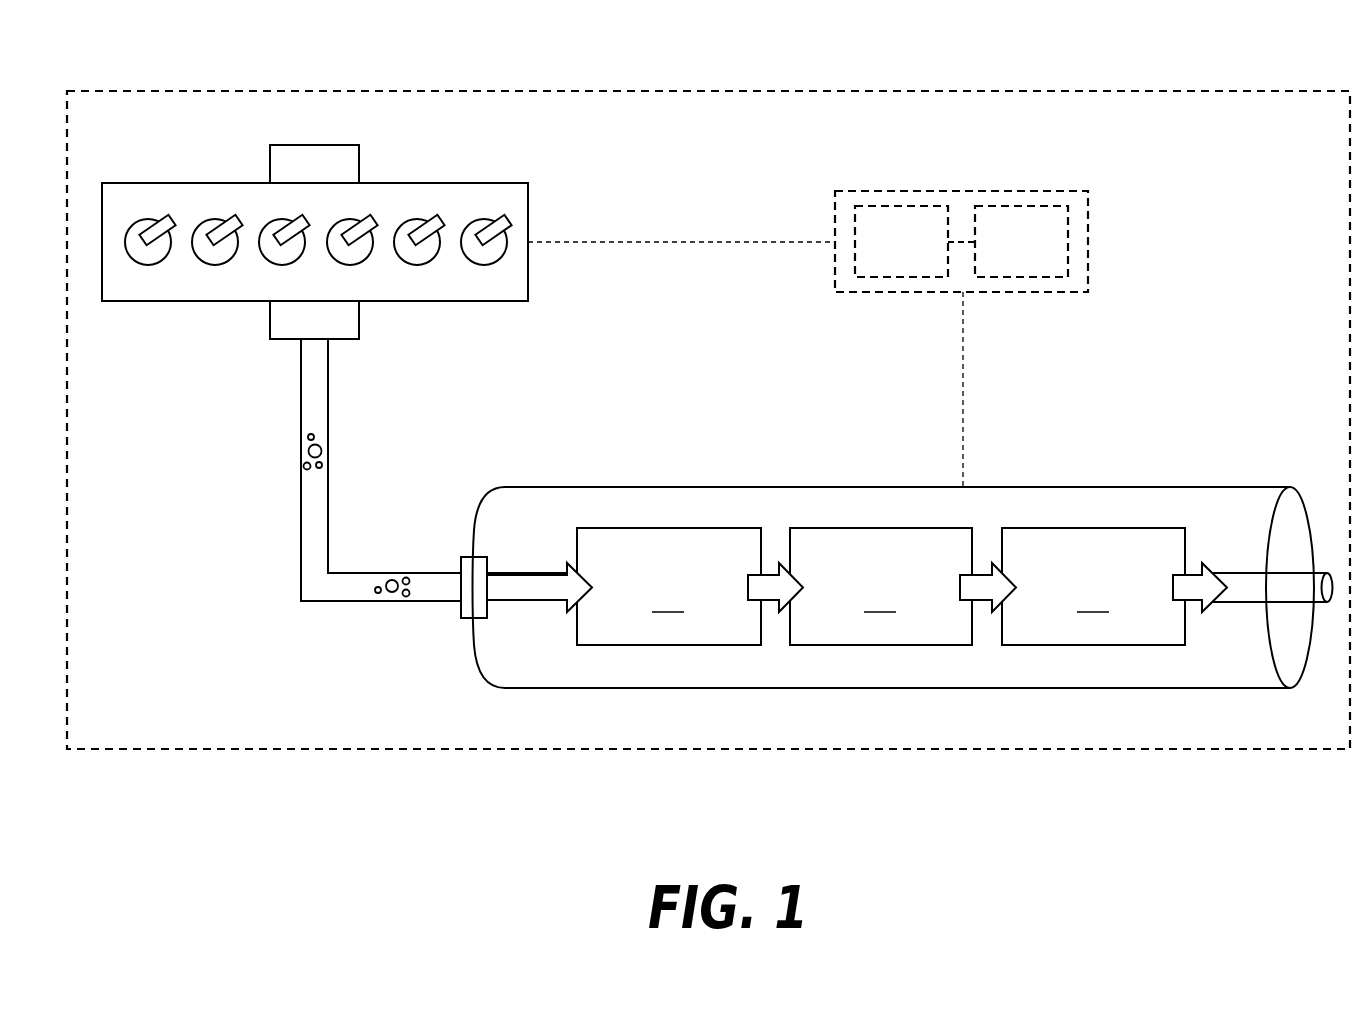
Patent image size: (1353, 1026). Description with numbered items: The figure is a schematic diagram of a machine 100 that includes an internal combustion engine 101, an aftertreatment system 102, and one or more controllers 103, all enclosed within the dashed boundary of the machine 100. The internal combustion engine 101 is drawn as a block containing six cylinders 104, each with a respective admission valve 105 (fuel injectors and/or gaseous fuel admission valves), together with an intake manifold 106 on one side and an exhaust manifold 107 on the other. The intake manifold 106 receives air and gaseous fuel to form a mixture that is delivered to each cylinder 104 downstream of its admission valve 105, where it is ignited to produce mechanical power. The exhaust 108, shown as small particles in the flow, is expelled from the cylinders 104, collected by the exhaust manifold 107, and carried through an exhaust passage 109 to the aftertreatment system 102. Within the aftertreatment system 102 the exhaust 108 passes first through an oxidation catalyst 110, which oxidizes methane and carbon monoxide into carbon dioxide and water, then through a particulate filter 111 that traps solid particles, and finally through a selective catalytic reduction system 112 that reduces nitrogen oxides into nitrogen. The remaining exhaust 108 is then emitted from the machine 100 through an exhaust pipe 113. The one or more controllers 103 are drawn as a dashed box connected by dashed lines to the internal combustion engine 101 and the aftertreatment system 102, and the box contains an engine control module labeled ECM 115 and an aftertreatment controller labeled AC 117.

The machine 100 is at (1132, 91).
The internal combustion engine 101 is at (148, 301).
The aftertreatment system 102 is at (1048, 487).
The one or more controllers 103 is at (963, 191).
The cylinders 104 is at (420, 203).
The admission valves 105 is at (418, 257).
The intake manifold 106 is at (270, 161).
The exhaust manifold 107 is at (359, 318).
The exhaust 108 is at (328, 454).
The exhaust passage 109 is at (301, 548).
The oxidation catalyst 110 is at (669, 586).
The particulate filter 111 is at (881, 586).
The selective catalytic reduction system 112 is at (1093, 586).
The exhaust pipe 113 is at (1305, 602).
The engine control module 115 is at (901, 241).
The aftertreatment controller 117 is at (1021, 241).